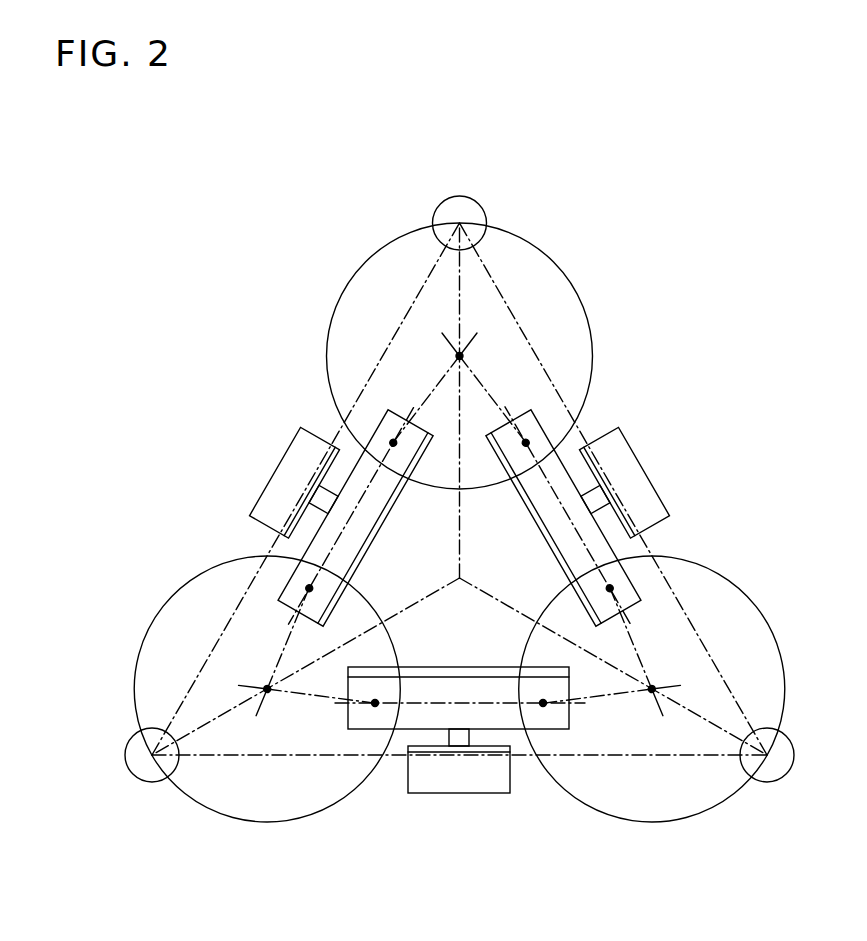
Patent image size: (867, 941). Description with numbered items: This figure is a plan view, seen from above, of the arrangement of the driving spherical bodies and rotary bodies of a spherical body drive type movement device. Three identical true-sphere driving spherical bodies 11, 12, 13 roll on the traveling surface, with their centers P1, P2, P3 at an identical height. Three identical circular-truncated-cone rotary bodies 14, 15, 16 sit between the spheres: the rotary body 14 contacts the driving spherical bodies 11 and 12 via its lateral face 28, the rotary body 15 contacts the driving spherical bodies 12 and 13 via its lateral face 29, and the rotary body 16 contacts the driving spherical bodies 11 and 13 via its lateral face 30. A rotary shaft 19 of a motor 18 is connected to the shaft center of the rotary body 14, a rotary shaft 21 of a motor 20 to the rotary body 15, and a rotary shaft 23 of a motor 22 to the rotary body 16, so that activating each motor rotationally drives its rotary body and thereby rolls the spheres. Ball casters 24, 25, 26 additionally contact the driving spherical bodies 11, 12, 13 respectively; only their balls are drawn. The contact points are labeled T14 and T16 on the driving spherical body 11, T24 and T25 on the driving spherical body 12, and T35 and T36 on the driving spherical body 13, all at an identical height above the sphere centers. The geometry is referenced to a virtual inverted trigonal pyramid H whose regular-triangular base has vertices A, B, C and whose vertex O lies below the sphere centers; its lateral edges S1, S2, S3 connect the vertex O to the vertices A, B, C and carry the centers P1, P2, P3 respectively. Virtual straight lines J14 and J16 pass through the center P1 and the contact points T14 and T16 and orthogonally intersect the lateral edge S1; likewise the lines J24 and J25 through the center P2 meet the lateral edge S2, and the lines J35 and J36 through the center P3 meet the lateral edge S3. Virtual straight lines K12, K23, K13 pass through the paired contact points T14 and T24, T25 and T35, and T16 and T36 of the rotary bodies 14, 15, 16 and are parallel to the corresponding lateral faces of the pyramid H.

The driving spherical body 11 is at (285, 818).
The driving spherical body 12 is at (690, 818).
The driving spherical body 13 is at (508, 250).
The rotary body 14 is at (537, 732).
The rotary body 15 is at (636, 556).
The rotary body 16 is at (363, 453).
The motor 18 is at (452, 772).
The rotary shaft 19 is at (462, 742).
The motor 20 is at (627, 464).
The rotary shaft 21 is at (628, 505).
The motor 22 is at (300, 452).
The rotary shaft 23 is at (280, 485).
The ball caster 24 is at (137, 775).
The ball caster 25 is at (785, 772).
The ball caster 26 is at (460, 196).
The lateral face 28 is at (396, 735).
The lateral face 29 is at (627, 552).
The lateral face 30 is at (262, 557).
The virtual straight line K12 is at (517, 733).
The virtual straight line K13 is at (300, 465).
The virtual straight line K23 is at (618, 412).
The virtual inverted trigonal pyramid H is at (343, 408).
The vertex O is at (460, 578).
The vertex A is at (131, 742).
The vertex B is at (737, 885).
The vertex C is at (452, 225).
The virtual straight line J36 is at (435, 400).
The contact point T36 is at (368, 415).
The virtual straight line J35 is at (470, 394).
The contact point T35 is at (500, 390).
The virtual straight line J16 is at (305, 652).
The contact point T16 is at (305, 589).
The virtual straight line J14 is at (272, 680).
The contact point T14 is at (352, 730).
The virtual straight line J25 is at (600, 665).
The contact point T25 is at (614, 587).
The virtual straight line J24 is at (645, 690).
The contact point T24 is at (567, 730).
The lateral edge S1 is at (245, 720).
The lateral edge S2 is at (620, 670).
The lateral edge S3 is at (505, 255).
The center P1 is at (266, 690).
The center P2 is at (653, 688).
The center P3 is at (460, 356).